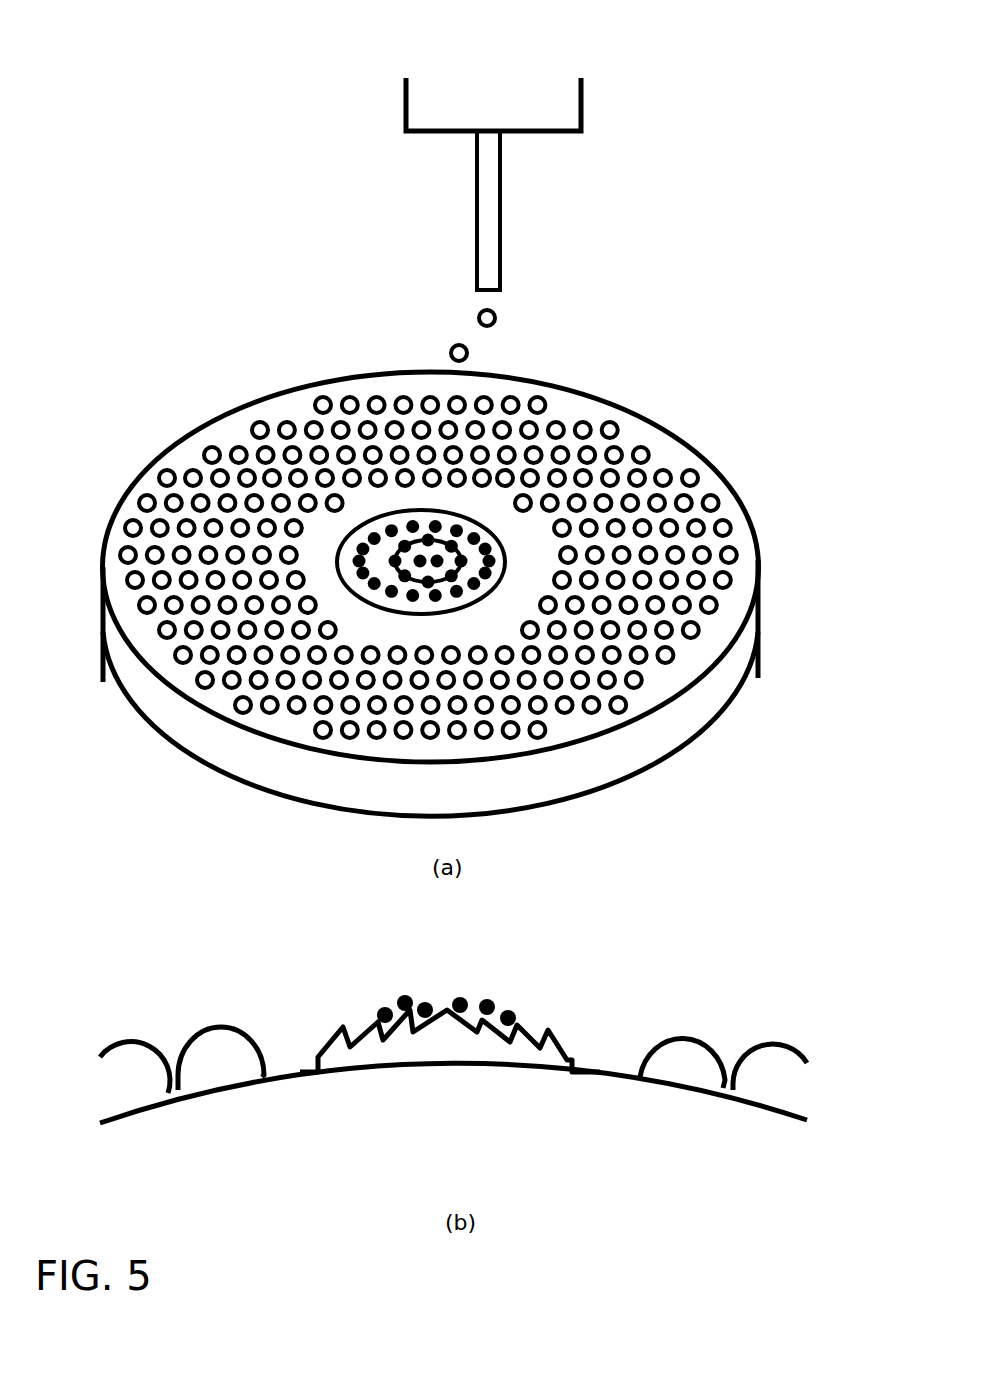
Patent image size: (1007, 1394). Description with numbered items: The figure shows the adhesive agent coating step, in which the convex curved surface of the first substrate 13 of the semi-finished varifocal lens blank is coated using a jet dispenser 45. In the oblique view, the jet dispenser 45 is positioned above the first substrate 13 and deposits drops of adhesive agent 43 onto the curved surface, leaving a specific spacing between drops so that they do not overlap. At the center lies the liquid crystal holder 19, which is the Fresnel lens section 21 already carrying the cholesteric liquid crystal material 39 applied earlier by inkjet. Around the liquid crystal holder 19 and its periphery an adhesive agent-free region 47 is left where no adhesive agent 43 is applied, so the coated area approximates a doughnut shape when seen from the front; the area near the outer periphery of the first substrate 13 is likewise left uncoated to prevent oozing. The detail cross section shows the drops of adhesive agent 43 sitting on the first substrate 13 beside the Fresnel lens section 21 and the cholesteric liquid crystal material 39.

The first substrate 13 is at (431, 499).
The liquid crystal holder 19 is at (453, 1132).
The Fresnel lens section 21 is at (383, 745).
The cholesteric liquid crystal material 39 is at (717, 832).
The adhesive agent 43 is at (673, 246).
The jet dispenser 45 is at (358, 167).
The adhesive agent-free region 47 is at (571, 517).